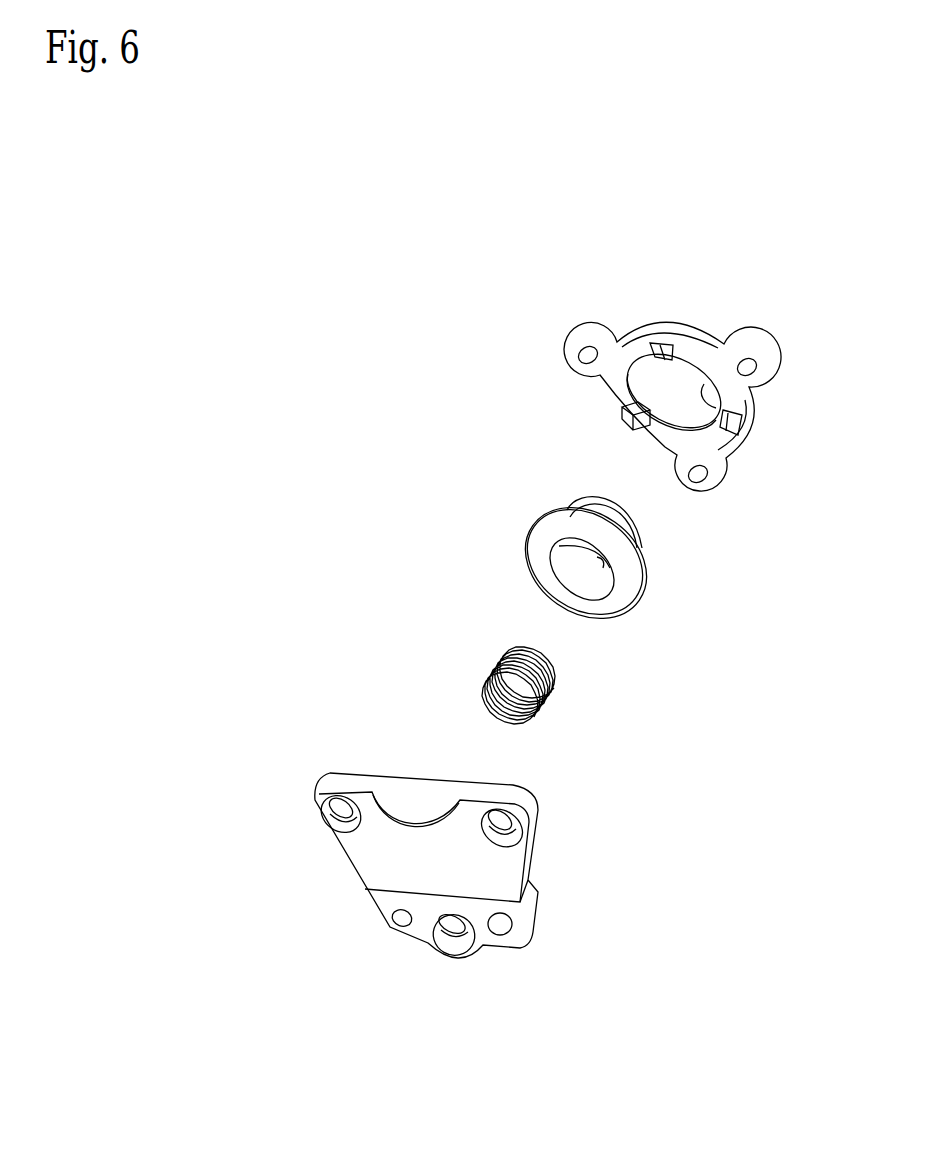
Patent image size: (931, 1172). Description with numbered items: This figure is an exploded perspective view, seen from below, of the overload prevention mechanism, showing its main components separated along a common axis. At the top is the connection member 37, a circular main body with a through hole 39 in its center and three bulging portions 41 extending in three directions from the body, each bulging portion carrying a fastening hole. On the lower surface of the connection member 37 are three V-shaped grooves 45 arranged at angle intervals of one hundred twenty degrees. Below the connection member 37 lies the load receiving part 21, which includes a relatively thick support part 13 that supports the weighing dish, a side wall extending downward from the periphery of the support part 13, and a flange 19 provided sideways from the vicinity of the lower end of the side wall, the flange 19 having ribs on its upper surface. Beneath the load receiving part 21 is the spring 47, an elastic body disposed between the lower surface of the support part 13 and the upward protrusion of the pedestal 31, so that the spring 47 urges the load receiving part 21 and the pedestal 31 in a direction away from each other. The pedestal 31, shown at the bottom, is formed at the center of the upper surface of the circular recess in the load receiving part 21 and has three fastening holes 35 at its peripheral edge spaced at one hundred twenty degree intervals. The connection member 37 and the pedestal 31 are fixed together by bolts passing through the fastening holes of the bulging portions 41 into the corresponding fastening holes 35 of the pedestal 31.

The support part 13 is at (597, 502).
The flange 19 is at (533, 556).
The load receiving part 21 is at (597, 555).
The pedestal 31 is at (436, 889).
The fastening holes 35 is at (400, 920).
The connection member 37 is at (666, 392).
The through hole 39 is at (706, 396).
The bulging portions 41 is at (565, 352).
The V-shaped grooves 45 is at (670, 360).
The spring 47 is at (540, 700).